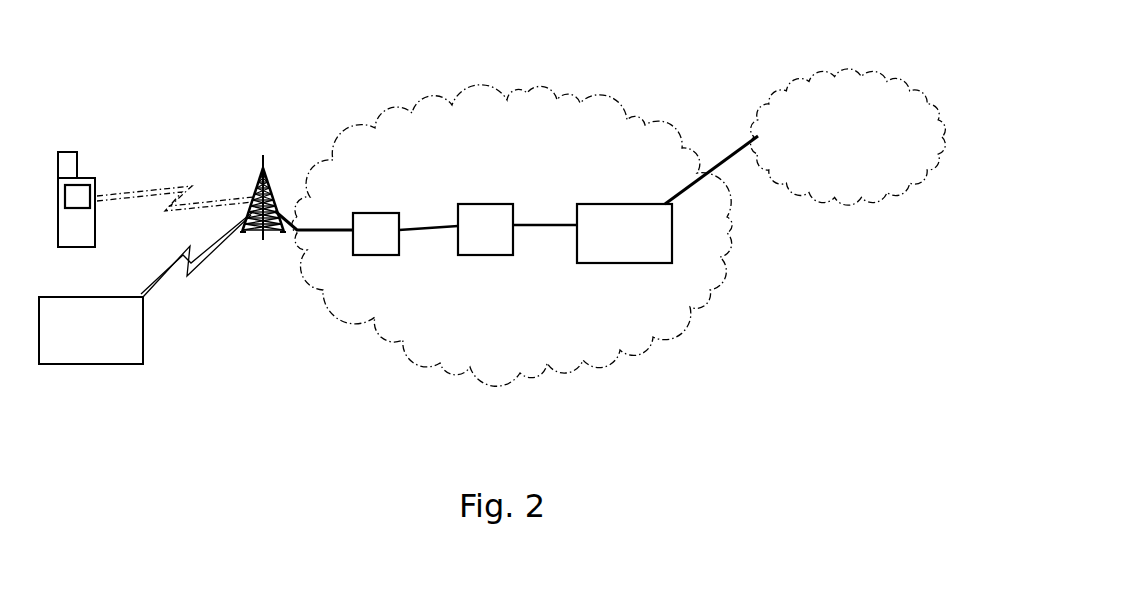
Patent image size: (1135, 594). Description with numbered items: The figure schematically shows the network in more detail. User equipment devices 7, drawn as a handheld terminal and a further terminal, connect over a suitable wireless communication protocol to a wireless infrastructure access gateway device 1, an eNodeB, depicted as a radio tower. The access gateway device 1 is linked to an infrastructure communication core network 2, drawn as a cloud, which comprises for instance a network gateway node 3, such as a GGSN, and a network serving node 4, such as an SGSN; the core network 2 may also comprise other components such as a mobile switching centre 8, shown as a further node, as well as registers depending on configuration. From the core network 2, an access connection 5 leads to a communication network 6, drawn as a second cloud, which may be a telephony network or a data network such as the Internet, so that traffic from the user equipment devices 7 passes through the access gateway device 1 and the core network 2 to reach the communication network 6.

The wireless infrastructure access gateway device 1 is at (263, 165).
The infrastructure communication core network 2 is at (387, 106).
The network gateway node 3 is at (627, 263).
The network serving node 4 is at (473, 257).
The access connection 5 is at (730, 158).
The communication network 6 is at (848, 200).
The user equipment device 7 is at (95, 177).
The mobile switching centre 8 is at (355, 255).